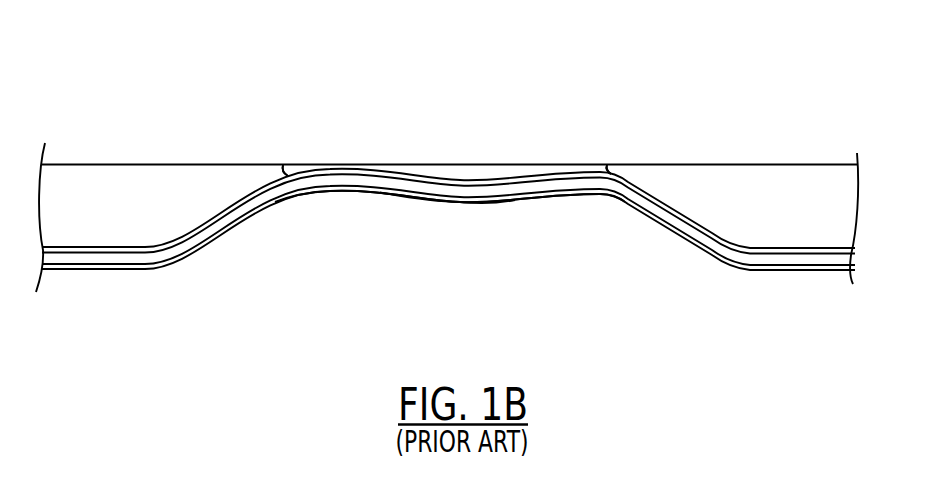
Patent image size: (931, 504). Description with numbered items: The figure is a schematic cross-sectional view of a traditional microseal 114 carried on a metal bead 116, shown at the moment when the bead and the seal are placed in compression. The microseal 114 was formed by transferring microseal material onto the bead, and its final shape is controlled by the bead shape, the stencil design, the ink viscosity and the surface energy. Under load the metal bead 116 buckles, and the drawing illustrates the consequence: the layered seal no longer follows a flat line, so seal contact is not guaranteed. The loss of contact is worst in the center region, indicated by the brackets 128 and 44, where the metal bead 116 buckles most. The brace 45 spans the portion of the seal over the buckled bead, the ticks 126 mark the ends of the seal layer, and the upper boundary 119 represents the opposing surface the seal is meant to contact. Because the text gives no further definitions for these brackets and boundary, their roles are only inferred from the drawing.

The bend region 45 is at (605, 88).
The adhesive layer 126 is at (362, 165).
The traditional microseal 114 is at (472, 165).
The metal bead 116 is at (655, 213).
The cover layer 119 is at (793, 164).
The central recess region 128 is at (375, 213).
The raised transition region 44 is at (270, 275).